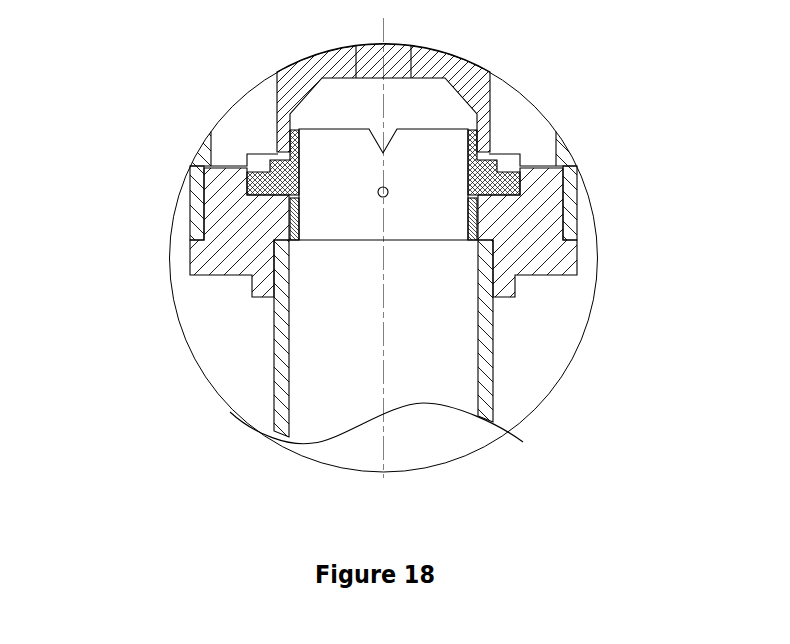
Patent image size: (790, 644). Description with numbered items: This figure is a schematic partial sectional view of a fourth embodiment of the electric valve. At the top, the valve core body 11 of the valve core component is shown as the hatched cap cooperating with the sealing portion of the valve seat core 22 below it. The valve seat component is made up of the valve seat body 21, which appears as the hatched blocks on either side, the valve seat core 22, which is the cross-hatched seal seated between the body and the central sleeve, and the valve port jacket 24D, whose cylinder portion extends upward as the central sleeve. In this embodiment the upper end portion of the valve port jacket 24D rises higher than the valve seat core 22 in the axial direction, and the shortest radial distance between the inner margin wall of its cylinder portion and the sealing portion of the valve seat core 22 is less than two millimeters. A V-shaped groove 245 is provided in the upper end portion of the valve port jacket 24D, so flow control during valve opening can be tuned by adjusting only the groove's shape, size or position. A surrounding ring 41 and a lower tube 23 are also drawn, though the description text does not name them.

The valve core body 11 is at (290, 95).
The retaining ring 41 is at (192, 193).
The valve seat body 21 is at (222, 246).
The valve seat core 22 is at (504, 185).
The valve port jacket 24D is at (479, 200).
The V-shaped groove 245 is at (379, 148).
The tube 23 is at (492, 327).